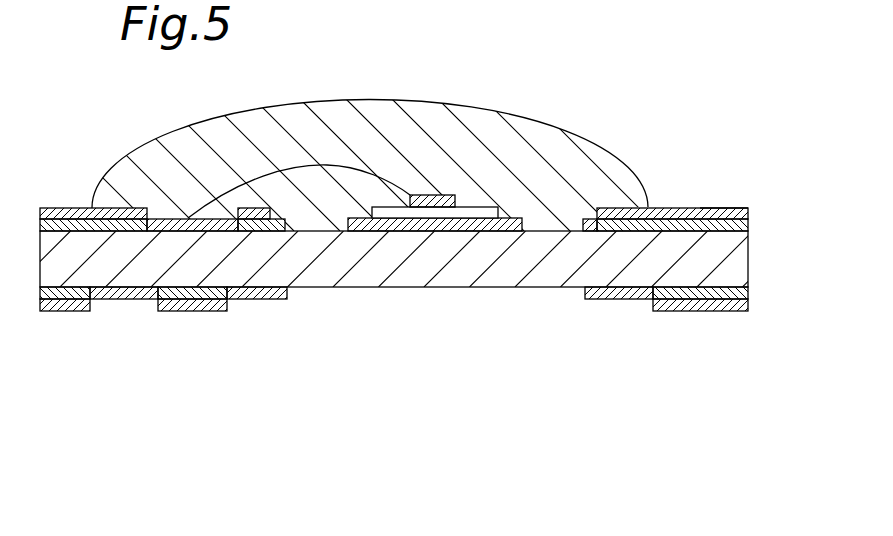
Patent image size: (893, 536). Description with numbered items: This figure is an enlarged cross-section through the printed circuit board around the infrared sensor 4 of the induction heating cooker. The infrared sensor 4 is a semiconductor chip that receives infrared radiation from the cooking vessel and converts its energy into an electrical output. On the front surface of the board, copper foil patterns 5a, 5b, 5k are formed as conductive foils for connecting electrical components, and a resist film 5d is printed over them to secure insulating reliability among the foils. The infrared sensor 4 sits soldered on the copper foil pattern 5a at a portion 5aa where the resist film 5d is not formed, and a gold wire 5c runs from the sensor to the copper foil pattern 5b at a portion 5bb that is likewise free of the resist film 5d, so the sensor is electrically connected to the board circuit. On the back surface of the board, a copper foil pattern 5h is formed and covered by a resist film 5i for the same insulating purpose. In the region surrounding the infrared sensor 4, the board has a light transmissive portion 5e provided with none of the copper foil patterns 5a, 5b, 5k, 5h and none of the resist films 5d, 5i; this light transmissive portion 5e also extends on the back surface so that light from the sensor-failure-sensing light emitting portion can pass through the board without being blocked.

The infrared sensor 4 is at (393, 213).
The copper foil pattern 5a is at (502, 228).
The portion where the resist film is not formed 5aa is at (508, 217).
The copper foil pattern 5b is at (120, 225).
The portion where the resist film is not formed 5bb is at (170, 217).
The gold wire 5c is at (322, 165).
The resist film 5d is at (68, 208).
The light transmissive portion 5e is at (325, 258).
The copper foil pattern 5h is at (61, 303).
The resist film 5i is at (263, 296).
The copper foil pattern 5k is at (723, 208).